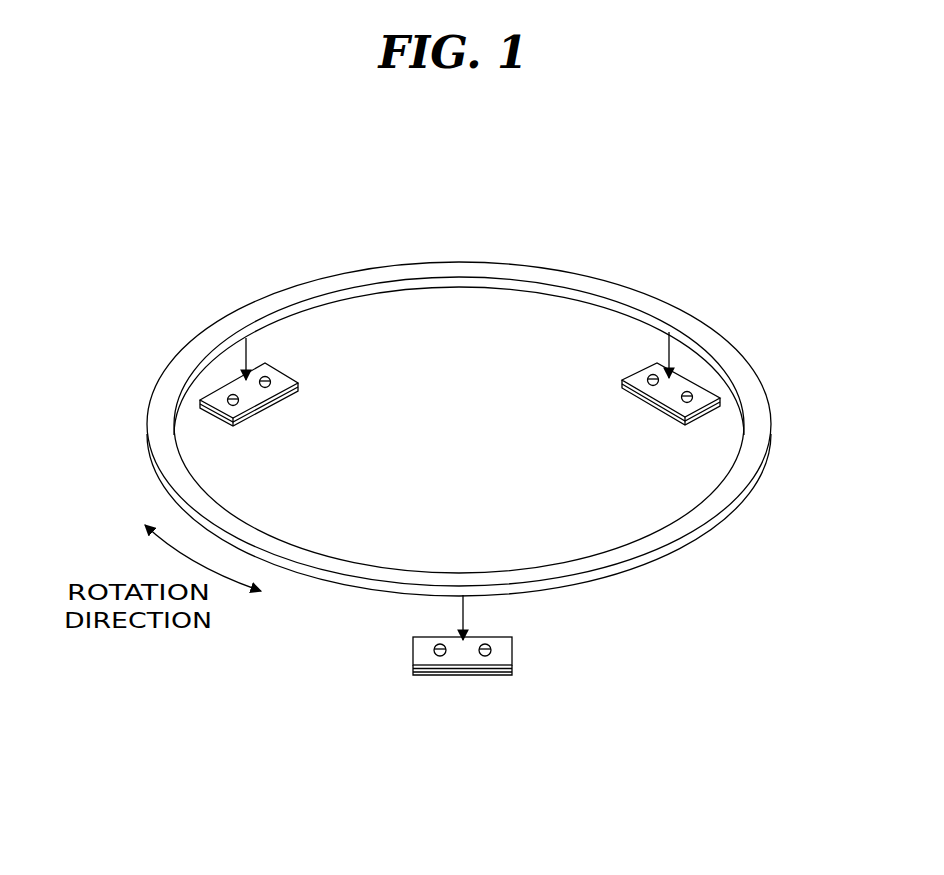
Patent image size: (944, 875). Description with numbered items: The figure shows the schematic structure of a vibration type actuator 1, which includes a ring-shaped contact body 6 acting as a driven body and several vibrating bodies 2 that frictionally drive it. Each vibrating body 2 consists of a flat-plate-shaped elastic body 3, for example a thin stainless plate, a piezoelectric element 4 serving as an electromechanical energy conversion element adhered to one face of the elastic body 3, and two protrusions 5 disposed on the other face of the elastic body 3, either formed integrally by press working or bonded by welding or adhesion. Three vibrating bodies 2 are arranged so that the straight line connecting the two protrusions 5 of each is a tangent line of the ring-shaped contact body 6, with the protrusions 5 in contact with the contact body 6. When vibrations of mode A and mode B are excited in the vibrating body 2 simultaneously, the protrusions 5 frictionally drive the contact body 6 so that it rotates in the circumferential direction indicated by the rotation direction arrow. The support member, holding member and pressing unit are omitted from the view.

The vibration type actuator 1 is at (488, 413).
The vibrating body 2 is at (523, 668).
The elastic body 3 is at (512, 654).
The piezoelectric element 4 is at (512, 673).
The protrusions 5 is at (441, 657).
The contact body 6 is at (755, 441).